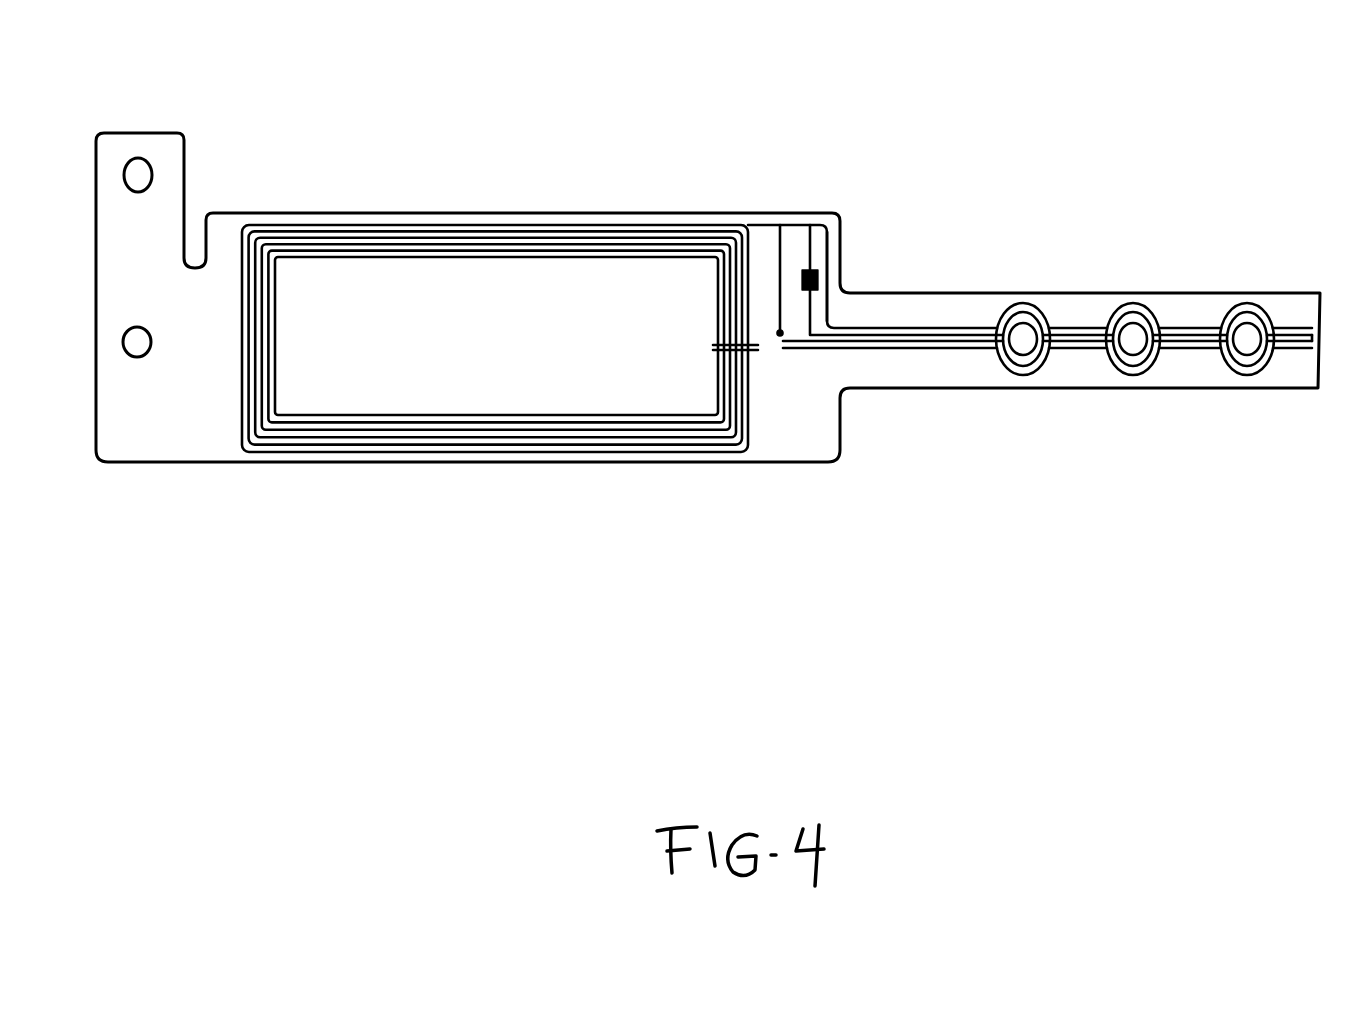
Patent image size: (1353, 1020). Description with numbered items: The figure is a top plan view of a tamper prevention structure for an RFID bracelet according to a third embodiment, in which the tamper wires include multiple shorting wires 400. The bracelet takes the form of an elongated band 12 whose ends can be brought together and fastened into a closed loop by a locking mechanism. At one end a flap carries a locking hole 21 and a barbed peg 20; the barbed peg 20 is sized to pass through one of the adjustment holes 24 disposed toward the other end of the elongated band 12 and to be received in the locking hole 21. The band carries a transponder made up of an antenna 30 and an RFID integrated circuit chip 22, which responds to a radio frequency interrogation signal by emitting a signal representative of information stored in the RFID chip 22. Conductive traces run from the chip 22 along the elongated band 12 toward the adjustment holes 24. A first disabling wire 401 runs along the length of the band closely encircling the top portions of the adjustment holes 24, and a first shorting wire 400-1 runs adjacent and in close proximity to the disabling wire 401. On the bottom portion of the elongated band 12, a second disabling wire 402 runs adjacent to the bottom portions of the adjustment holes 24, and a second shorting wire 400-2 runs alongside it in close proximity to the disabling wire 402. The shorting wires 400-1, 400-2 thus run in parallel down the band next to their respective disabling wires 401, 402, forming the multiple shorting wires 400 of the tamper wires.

The elongated band 12 is at (208, 398).
The barbed peg 20 is at (135, 357).
The locking hole 21 is at (156, 168).
The RFID integrated circuit chip 22 is at (804, 268).
The adjustment hole 24 is at (1243, 343).
The antenna 30 is at (352, 462).
The shorting wires 400 is at (706, 213).
The first shorting wire 400-1 is at (836, 242).
The second shorting wire 400-2 is at (783, 353).
The first disabling wire 401 is at (1024, 301).
The second disabling wire 402 is at (999, 360).